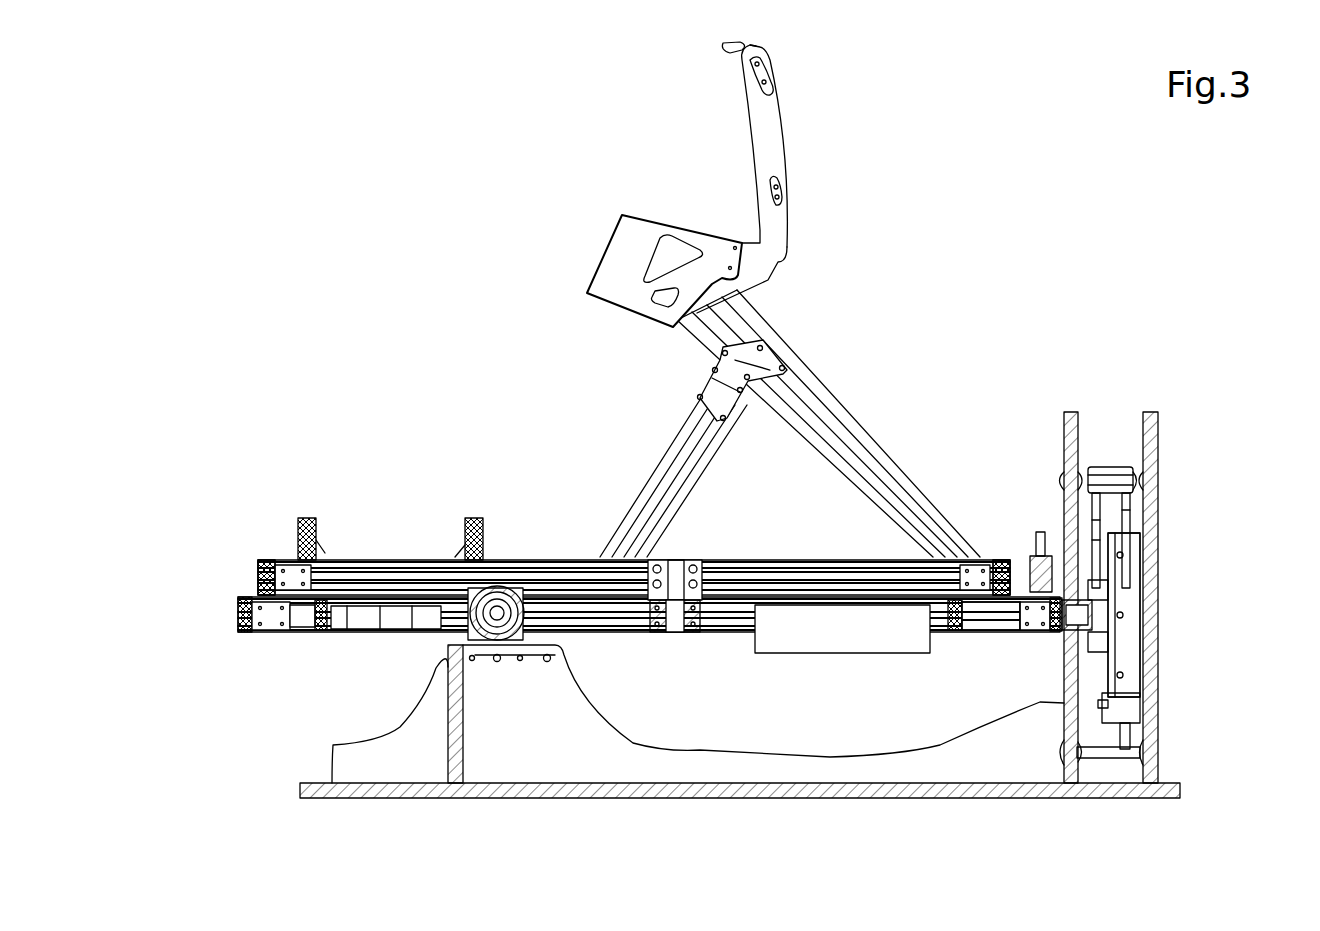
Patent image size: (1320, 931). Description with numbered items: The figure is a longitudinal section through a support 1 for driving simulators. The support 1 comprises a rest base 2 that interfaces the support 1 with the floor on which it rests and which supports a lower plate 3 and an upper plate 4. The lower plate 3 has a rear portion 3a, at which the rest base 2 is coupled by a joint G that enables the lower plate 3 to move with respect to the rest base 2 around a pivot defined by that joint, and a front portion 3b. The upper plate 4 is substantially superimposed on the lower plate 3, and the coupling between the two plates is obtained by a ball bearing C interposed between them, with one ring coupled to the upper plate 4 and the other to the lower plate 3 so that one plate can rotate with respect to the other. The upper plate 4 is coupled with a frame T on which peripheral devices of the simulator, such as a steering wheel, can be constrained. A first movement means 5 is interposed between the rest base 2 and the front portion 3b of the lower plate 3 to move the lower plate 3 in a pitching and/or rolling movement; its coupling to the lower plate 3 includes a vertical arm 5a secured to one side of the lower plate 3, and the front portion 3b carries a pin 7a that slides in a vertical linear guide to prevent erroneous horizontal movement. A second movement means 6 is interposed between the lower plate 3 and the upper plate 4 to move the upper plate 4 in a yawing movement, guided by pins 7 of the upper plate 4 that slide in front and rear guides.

The support 1 is at (425, 233).
The rest base 2 is at (383, 765).
The lower plate 3 is at (605, 615).
The rear portion 3a is at (445, 620).
The front portion 3b is at (985, 630).
The upper plate 4 is at (373, 560).
The first movement means 5 is at (1107, 428).
The vertical arm 5a is at (1133, 577).
The second movement means 6 is at (1040, 525).
The pins 7 is at (258, 575).
The pin 7a is at (1080, 615).
The joint G is at (503, 610).
The frame T is at (817, 403).
The ball bearing C is at (690, 612).